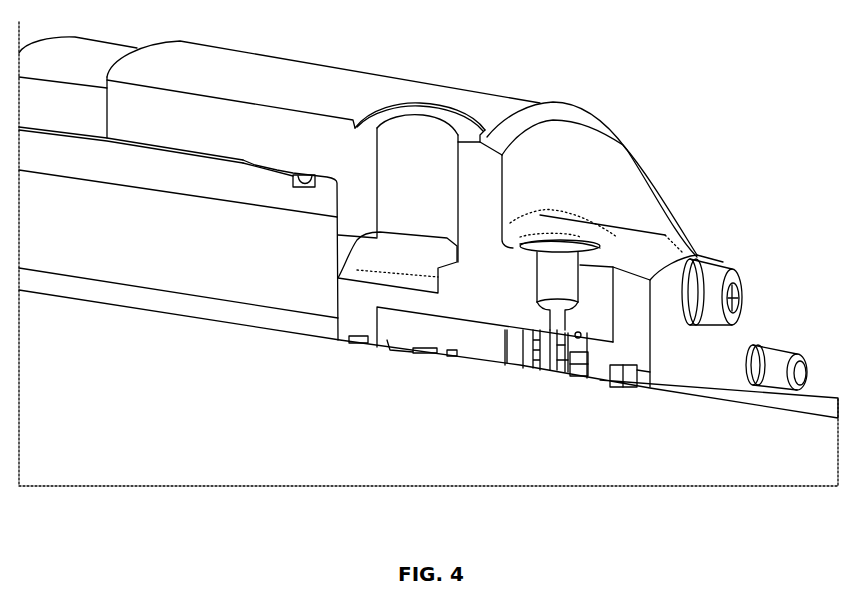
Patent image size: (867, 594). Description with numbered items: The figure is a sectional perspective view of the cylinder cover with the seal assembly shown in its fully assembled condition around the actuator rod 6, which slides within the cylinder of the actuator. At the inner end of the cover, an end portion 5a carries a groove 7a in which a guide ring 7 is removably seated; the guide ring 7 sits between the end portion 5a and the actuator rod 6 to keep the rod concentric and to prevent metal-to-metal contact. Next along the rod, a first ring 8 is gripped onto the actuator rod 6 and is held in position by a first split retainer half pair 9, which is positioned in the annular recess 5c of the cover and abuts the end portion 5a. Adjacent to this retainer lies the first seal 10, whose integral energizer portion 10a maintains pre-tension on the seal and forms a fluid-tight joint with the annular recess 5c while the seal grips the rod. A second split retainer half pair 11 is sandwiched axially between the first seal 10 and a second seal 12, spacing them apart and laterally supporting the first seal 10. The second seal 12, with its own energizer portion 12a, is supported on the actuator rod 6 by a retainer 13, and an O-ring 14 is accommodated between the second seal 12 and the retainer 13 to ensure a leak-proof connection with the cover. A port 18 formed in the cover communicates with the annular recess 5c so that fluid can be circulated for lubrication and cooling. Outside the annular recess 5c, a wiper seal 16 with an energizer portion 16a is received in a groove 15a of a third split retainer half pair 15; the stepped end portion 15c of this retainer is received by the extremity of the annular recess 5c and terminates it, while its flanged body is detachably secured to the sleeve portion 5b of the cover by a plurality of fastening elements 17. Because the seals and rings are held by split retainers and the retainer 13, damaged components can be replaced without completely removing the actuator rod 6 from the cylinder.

The end portion 5a is at (350, 302).
The sleeve portion 5b is at (670, 240).
The annular recess 5c is at (457, 323).
The actuator rod 6 is at (698, 470).
The guide ring 7 is at (351, 345).
The groove 7a is at (337, 340).
The first ring 8 is at (420, 350).
The first split retainer half pair 9 is at (403, 323).
The first seal 10 is at (520, 362).
The energizer portion 10a is at (517, 338).
The second split retainer half pair 11 is at (547, 363).
The second seal 12 is at (577, 377).
The energizer portion 12a is at (577, 363).
The retainer 13 is at (613, 267).
The O-ring 14 is at (580, 333).
The third split retainer half pair 15 is at (750, 343).
The groove 15a is at (639, 390).
The stepped end portion 15c is at (600, 375).
The wiper seal 16 is at (607, 382).
The energizer portion 16a is at (650, 388).
The fastening elements 17 is at (717, 273).
The port 18 is at (577, 245).